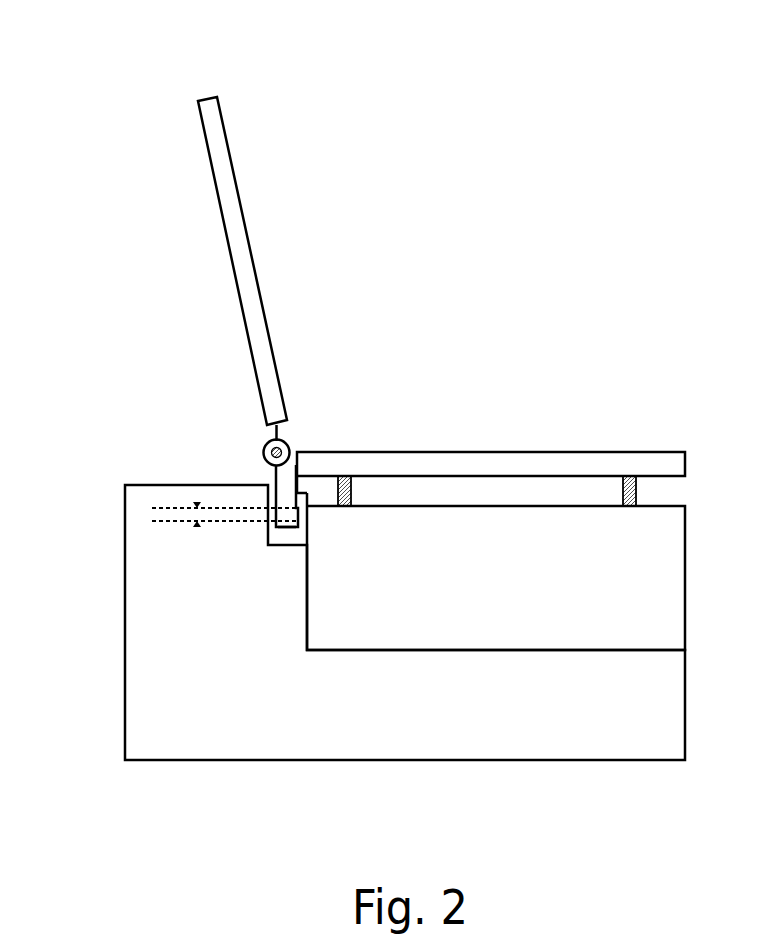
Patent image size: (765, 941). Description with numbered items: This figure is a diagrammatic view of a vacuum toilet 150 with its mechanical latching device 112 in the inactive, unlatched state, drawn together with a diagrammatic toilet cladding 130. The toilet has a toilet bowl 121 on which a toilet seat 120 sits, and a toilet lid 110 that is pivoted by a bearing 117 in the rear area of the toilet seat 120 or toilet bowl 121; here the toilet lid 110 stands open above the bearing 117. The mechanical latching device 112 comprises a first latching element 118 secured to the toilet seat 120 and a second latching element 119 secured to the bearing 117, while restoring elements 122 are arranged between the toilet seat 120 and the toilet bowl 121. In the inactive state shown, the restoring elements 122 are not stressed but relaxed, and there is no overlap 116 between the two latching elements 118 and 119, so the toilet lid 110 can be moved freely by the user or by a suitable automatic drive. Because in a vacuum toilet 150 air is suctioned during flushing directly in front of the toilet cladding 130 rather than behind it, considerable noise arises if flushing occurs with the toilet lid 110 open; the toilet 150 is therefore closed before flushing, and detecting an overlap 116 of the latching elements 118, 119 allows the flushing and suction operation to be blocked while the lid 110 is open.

The toilet lid 110 is at (228, 248).
The mechanical latching device 112 is at (295, 528).
The overlap 116 is at (163, 517).
The bearing 117 is at (263, 456).
The first latching element 118 is at (297, 495).
The second latching element 119 is at (275, 480).
The toilet seat 120 is at (505, 452).
The toilet bowl 121 is at (448, 625).
The restoring elements 122 is at (345, 478).
The toilet cladding 130 is at (193, 738).
The vacuum toilet 150 is at (390, 84).